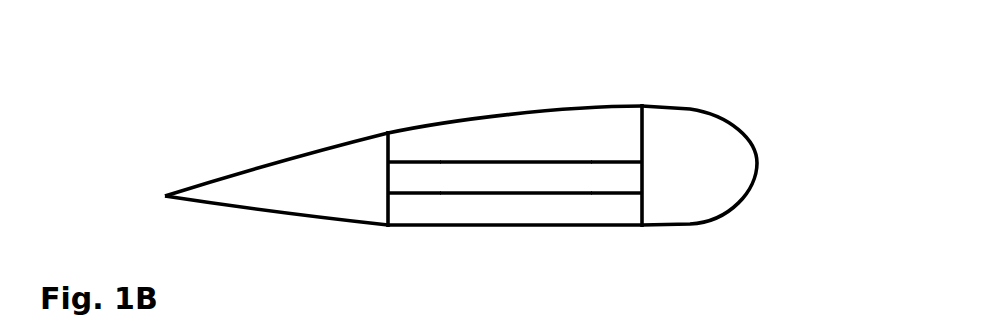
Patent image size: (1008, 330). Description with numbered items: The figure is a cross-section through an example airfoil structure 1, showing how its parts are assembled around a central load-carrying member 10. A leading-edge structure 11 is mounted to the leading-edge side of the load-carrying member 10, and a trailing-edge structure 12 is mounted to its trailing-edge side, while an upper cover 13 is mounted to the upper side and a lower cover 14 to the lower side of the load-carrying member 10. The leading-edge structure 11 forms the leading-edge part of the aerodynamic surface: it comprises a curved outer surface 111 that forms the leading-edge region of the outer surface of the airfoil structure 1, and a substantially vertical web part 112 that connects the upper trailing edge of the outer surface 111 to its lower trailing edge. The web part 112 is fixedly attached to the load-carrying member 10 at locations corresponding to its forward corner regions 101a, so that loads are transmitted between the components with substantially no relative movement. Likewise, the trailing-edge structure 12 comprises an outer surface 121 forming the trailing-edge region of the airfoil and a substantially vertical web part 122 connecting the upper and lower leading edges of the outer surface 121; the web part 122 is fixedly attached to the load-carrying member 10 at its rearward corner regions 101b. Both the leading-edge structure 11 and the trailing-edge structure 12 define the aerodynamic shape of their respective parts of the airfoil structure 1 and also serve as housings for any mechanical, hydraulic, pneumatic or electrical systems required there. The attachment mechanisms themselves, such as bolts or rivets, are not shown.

The airfoil structure 1 is at (249, 102).
The load-carrying member 10 is at (430, 177).
The forward corner regions 101a is at (640, 173).
The rearward corner regions 101b is at (391, 182).
The leading-edge structure 11 is at (723, 160).
The curved outer surface 111 is at (712, 115).
The web part 112 is at (640, 130).
The trailing-edge structure 12 is at (283, 177).
The outer surface 121 is at (248, 208).
The web part 122 is at (388, 210).
The upper cover 13 is at (535, 112).
The lower cover 14 is at (517, 230).